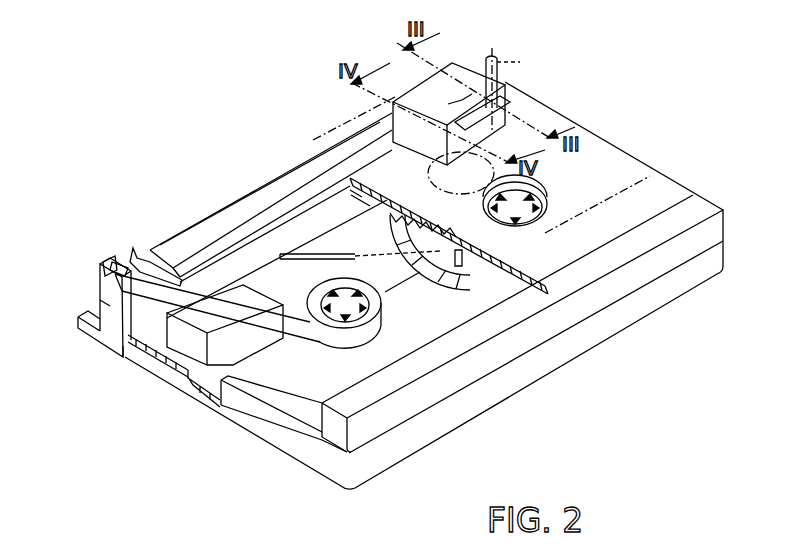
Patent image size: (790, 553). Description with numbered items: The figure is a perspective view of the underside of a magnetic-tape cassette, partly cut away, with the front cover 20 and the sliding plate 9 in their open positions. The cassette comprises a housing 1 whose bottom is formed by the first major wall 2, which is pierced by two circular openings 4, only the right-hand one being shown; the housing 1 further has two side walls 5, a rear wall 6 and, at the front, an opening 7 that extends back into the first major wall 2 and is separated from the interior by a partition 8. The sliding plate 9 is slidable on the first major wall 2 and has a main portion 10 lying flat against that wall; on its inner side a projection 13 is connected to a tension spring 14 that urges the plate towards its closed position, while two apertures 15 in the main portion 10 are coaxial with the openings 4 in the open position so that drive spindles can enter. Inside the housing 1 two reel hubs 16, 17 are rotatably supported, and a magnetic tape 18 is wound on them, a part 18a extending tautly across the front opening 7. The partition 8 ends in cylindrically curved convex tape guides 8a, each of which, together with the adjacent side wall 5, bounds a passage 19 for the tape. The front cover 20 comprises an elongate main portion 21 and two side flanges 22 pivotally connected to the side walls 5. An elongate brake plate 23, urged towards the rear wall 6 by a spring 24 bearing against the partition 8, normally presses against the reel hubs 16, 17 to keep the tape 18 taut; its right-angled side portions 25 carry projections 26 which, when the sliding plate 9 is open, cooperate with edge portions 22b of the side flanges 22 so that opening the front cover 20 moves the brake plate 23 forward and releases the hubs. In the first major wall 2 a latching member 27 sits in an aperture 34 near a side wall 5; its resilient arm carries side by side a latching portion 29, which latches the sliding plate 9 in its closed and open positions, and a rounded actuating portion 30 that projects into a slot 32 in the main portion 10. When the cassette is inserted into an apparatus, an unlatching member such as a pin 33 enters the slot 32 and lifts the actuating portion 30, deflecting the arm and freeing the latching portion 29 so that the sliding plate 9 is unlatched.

The housing 1 is at (457, 434).
The first major wall 2 is at (470, 290).
The circular openings 4 is at (532, 217).
The side walls 5 is at (263, 427).
The rear wall 6 is at (518, 378).
The front opening 7 is at (303, 193).
The partition 8 is at (287, 233).
The tape guides 8a is at (125, 260).
The sliding plate 9 is at (593, 159).
The main portion 10 is at (617, 167).
The projection 13 is at (400, 250).
The tension spring 14 is at (393, 225).
The apertures 15 is at (441, 151).
The reel hub 16 is at (527, 183).
The reel hub 17 is at (343, 283).
The magnetic tape 18 is at (307, 335).
The tape portion 18a is at (222, 222).
The passage 19 is at (125, 267).
The front cover 20 is at (82, 329).
The main portion 21 is at (83, 318).
The side flanges 22 is at (113, 342).
The edge portions 22b is at (102, 303).
The brake plate 23 is at (237, 342).
The spring 24 is at (330, 253).
The side portions 25 is at (185, 343).
The projection 26 is at (97, 282).
The latching member 27 is at (468, 82).
The latching portion 29 is at (481, 82).
The actuating portion 30 is at (453, 93).
The slot 32 is at (478, 126).
The pin 33 is at (520, 60).
The aperture 34 is at (445, 103).